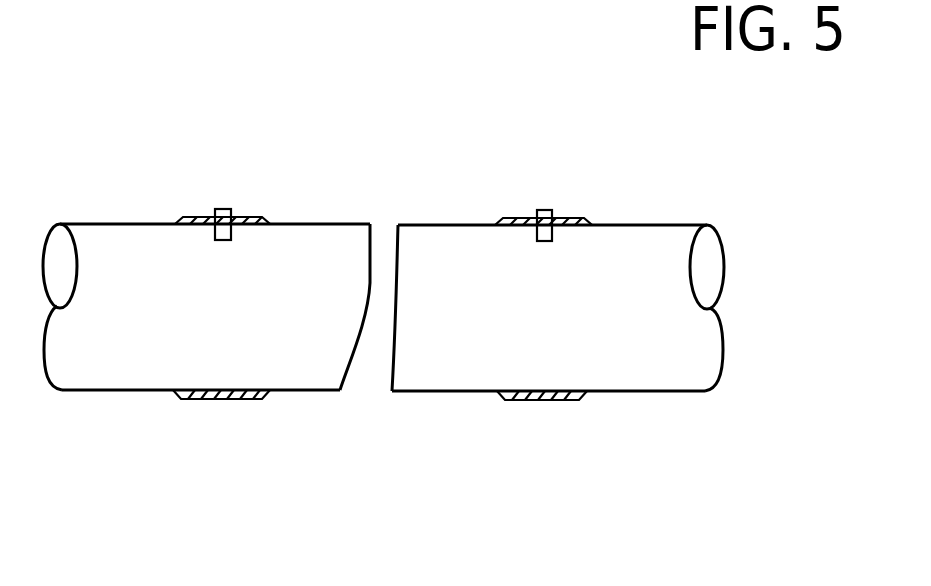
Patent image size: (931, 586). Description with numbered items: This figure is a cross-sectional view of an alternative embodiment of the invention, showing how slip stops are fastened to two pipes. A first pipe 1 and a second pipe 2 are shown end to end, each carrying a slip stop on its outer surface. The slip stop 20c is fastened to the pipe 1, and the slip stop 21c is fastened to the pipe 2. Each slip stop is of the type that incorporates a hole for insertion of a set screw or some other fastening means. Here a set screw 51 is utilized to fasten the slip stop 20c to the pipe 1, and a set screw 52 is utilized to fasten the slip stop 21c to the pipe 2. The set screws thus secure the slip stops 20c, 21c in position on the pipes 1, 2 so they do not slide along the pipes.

The pipe 1 is at (100, 391).
The pipe 2 is at (663, 391).
The set screw 51 is at (220, 209).
The set screw 52 is at (547, 210).
The slip stop 20c is at (218, 399).
The slip stop 21c is at (547, 400).